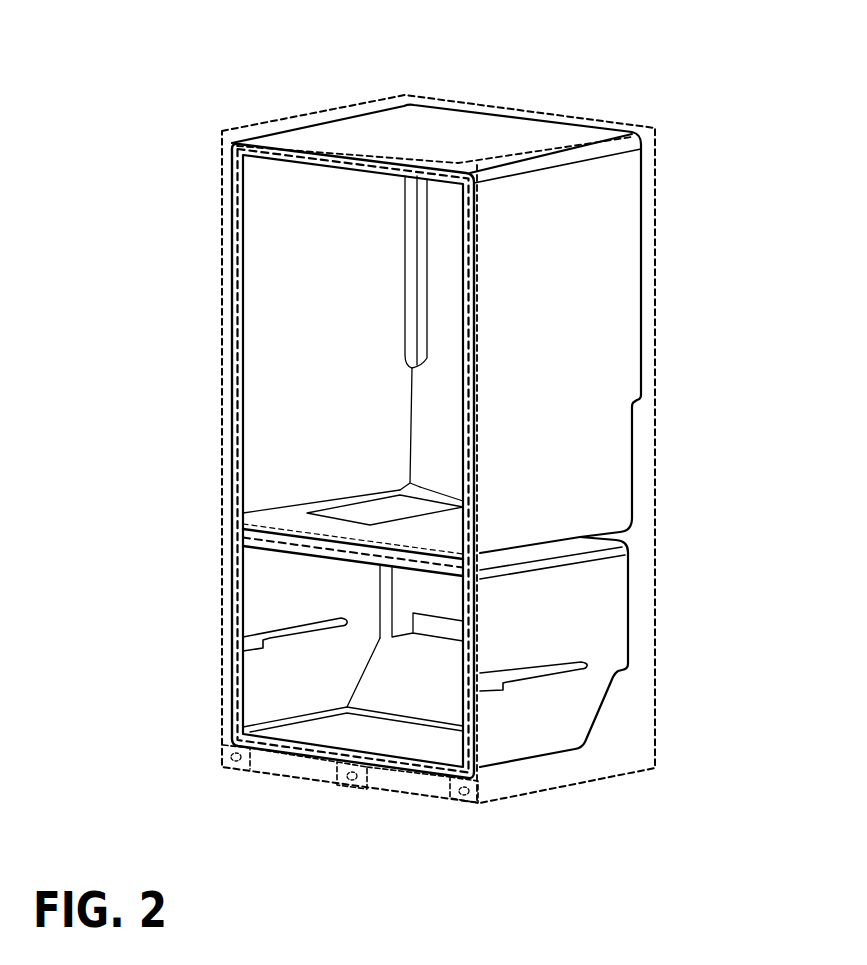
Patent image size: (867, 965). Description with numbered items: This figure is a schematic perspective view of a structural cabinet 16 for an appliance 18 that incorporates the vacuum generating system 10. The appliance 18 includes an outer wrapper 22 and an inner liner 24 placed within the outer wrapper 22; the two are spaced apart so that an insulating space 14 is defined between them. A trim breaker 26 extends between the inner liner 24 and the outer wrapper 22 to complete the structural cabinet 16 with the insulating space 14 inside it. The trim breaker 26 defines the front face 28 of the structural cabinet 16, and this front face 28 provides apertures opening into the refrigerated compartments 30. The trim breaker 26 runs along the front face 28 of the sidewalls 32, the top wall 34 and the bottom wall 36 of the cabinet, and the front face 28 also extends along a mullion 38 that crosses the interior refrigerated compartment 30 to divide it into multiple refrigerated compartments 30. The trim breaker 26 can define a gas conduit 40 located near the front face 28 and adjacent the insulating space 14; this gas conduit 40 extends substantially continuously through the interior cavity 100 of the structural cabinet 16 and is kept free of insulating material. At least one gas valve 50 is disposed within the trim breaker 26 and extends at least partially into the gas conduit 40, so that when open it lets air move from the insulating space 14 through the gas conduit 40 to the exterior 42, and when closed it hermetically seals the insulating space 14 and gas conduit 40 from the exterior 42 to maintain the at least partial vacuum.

The vacuum generating system 10 is at (447, 85).
The insulating space 14 is at (335, 116).
The structural cabinet 16 is at (666, 235).
The appliance 18 is at (278, 112).
The outer wrapper 22 is at (638, 417).
The inner liner 24 is at (598, 298).
The trim breaker 26 is at (230, 298).
The front face 28 is at (233, 604).
The refrigerated compartment 30 is at (286, 438).
The sidewall 32 is at (600, 490).
The top wall 34 is at (480, 138).
The bottom wall 36 is at (397, 775).
The mullion 38 is at (290, 552).
The gas conduit 40 is at (220, 210).
The exterior 42 is at (603, 715).
The gas valve 50 is at (230, 388).
The interior cavity 100 is at (631, 616).